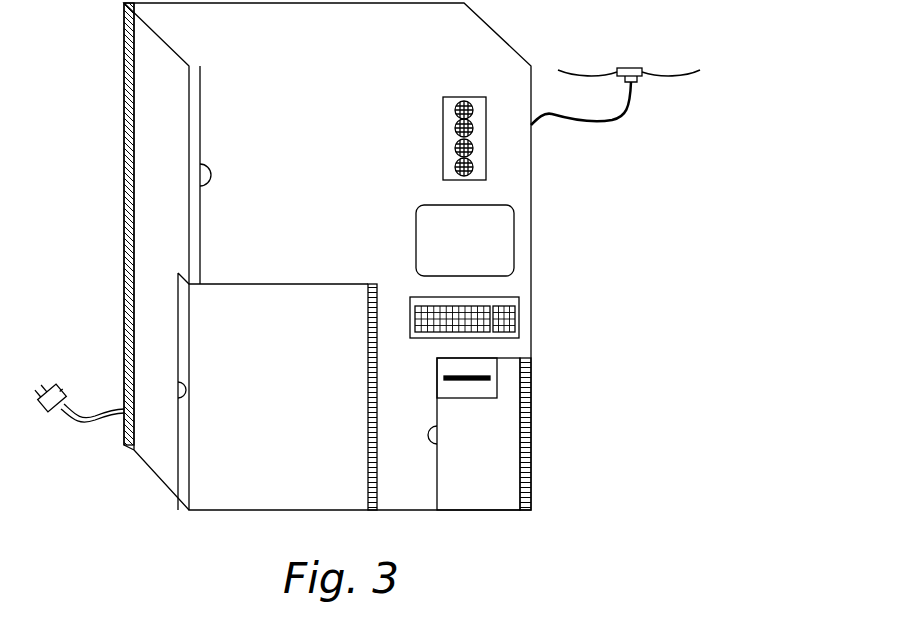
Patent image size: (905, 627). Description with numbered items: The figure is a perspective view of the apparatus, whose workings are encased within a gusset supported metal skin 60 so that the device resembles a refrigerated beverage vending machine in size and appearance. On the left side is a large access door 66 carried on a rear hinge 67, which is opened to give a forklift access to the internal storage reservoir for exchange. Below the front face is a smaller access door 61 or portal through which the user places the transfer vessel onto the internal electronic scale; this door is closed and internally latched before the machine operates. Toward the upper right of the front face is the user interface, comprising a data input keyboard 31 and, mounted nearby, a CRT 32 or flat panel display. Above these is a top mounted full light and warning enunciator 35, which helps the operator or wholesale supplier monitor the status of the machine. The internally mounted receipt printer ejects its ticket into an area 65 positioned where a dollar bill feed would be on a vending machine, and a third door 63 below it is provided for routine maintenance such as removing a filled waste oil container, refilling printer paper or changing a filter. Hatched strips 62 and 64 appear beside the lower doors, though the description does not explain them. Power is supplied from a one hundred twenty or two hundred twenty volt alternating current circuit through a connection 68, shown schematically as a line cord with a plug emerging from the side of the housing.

The data input keyboard 31 is at (519, 323).
The CRT 32 is at (514, 247).
The full light and warning enunciator 35 is at (443, 137).
The metal skin 60 is at (315, 169).
The smaller access door 61 is at (300, 404).
The ventilation strip 62 is at (377, 396).
The third door 63 is at (493, 459).
The ventilation strip 64 is at (531, 424).
The ticket ejection area 65 is at (485, 380).
The access door 66 is at (174, 207).
The rear hinge 67 is at (124, 172).
The connection 68 is at (57, 385).